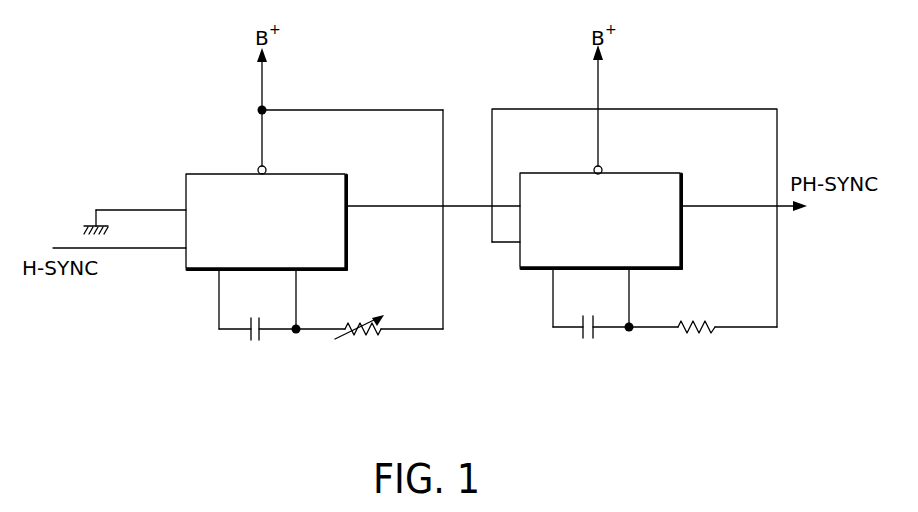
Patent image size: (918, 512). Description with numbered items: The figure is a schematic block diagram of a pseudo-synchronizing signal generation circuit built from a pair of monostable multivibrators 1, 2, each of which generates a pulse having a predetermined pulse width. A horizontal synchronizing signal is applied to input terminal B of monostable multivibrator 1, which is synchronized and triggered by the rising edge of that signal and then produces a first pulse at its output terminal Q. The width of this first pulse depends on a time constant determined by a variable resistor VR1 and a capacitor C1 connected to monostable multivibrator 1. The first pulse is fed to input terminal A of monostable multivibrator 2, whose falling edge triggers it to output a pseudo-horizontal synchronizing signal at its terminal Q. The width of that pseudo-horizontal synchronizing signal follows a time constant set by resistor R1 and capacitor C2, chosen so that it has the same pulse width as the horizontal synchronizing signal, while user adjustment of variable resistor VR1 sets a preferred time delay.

The monostable multivibrator 1 is at (222, 173).
The monostable multivibrator 2 is at (545, 172).
The capacitor C1 is at (257, 343).
The variable resistor VR1 is at (369, 342).
The capacitor C2 is at (591, 341).
The resistor R1 is at (703, 343).